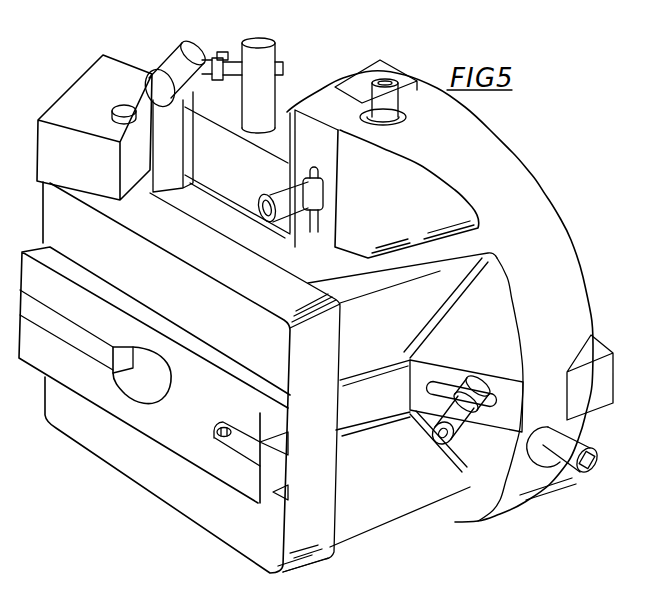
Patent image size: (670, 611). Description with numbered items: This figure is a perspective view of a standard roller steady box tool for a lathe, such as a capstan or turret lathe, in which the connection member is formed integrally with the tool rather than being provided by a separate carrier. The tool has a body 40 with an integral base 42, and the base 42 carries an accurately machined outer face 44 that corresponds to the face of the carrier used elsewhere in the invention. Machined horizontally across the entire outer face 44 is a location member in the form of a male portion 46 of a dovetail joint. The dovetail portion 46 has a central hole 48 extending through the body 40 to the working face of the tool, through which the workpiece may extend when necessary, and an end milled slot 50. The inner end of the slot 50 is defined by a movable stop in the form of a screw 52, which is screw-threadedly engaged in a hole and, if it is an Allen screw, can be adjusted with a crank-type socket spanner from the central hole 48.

The body 40 is at (363, 513).
The base 42 is at (292, 550).
The outer face 44 is at (152, 475).
The male portion of dovetail joint 46 is at (201, 388).
The central hole 48 is at (137, 383).
The end milled slot 50 is at (250, 450).
The screw 52 is at (217, 438).